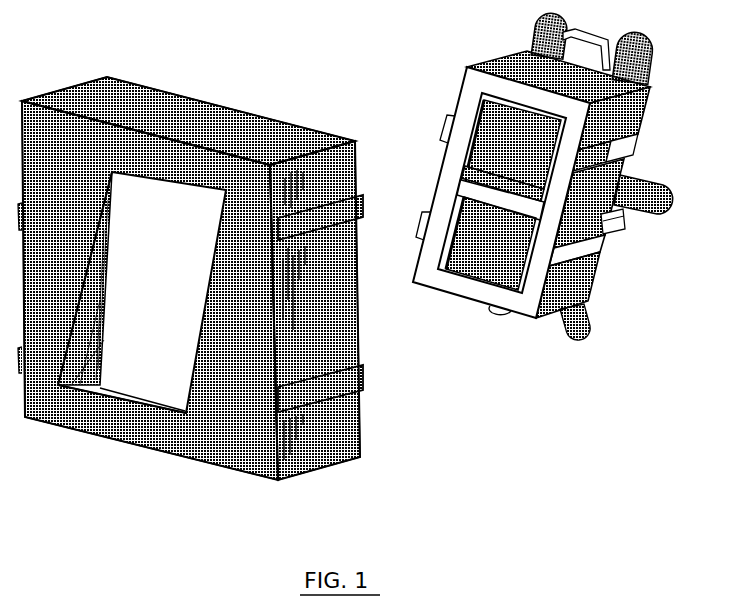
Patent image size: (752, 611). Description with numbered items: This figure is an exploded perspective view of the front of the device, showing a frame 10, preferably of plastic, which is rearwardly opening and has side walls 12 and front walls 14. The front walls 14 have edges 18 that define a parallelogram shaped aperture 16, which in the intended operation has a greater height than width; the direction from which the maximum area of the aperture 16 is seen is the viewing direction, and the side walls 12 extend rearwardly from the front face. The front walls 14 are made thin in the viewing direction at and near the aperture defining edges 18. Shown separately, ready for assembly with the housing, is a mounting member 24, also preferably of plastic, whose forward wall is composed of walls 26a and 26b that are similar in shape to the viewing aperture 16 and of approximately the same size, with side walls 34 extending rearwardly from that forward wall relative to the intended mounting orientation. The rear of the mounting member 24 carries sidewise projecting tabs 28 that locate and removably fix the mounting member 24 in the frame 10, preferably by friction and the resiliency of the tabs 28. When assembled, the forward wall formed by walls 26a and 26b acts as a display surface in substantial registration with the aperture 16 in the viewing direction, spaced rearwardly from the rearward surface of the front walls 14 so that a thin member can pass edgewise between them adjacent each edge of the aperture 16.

The frame 10 is at (225, 281).
The side walls 12 is at (338, 323).
The front walls 14 is at (215, 452).
The aperture 16 is at (142, 292).
The edges 18 is at (111, 203).
The mounting member 24 is at (575, 179).
The wall 26a is at (467, 256).
The wall 26b is at (508, 117).
The tabs 28 is at (674, 200).
The side walls 34 is at (608, 204).